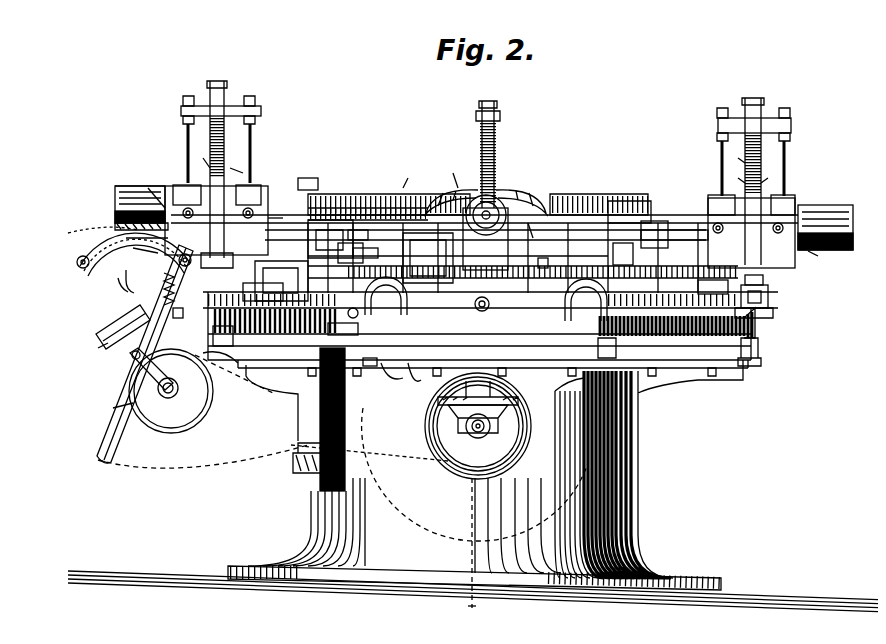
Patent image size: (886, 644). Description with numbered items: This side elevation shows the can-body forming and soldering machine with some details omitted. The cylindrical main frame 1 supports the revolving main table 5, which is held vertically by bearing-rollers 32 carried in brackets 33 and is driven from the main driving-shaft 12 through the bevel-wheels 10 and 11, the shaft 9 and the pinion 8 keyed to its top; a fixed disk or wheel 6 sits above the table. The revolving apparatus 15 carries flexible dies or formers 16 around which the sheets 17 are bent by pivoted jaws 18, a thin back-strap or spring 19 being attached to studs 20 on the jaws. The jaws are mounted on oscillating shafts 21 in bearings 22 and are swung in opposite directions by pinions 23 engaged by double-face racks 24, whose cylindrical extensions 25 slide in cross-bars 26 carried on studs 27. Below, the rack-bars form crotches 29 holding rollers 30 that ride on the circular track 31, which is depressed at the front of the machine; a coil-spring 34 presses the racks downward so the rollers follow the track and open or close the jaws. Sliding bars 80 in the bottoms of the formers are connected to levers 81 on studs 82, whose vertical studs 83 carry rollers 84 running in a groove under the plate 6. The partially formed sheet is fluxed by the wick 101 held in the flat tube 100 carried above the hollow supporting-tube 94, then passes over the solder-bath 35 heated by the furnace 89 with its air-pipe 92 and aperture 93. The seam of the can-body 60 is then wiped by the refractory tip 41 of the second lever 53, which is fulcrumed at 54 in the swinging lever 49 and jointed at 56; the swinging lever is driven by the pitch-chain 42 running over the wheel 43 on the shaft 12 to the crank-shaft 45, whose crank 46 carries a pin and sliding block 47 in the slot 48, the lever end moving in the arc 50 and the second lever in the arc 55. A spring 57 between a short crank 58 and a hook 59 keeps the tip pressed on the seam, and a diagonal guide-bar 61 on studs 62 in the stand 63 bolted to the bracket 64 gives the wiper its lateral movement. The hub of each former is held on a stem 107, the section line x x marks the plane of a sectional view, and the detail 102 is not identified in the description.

The main frame 1 is at (494, 478).
The main table 5 is at (544, 258).
The stationary disk or wheel 6 is at (560, 195).
The pinion 8 is at (472, 614).
The shaft 9 is at (430, 381).
The bevel-wheel 10 is at (418, 408).
The bevel-wheel 11 is at (455, 428).
The main driving-shaft 12 is at (380, 485).
The revolving apparatus 15 is at (484, 189).
The flexible dies or formers 16 is at (533, 170).
The sheets 17 is at (523, 232).
The pivoted jaws 18 is at (157, 195).
The flexible back-strap or spring 19 is at (110, 192).
The studs 20 is at (110, 212).
The oscillating shafts 21 is at (257, 186).
The bearings 22 is at (245, 176).
The pinions 23 is at (195, 165).
The double-face racks 24 is at (240, 165).
The cylindrical extension 25 is at (753, 90).
The cross-bars 26 is at (253, 103).
The studs 27 is at (180, 128).
The crotches 29 is at (190, 318).
The rollers 30 is at (205, 325).
The circular track 31 is at (470, 312).
The bearing-rollers 32 is at (343, 314).
The brackets 33 is at (592, 336).
The coil-spring 34 is at (735, 158).
The solder-bath 35 is at (207, 138).
The tip 41 is at (246, 208).
The pitch-chain 42 is at (278, 440).
The wheel 43 is at (385, 300).
The crank-shaft 45 is at (171, 391).
The crank 46 is at (143, 350).
The pin and sliding block 47 is at (118, 358).
The slot 48 is at (110, 395).
The swinging lever 49 is at (92, 452).
The arc 50 is at (170, 462).
The second end lever 53 is at (96, 310).
The radial fulcrum or bearing 54 is at (90, 330).
The arc 55 is at (65, 243).
The joint 56 is at (144, 258).
The spring 57 is at (167, 295).
The short crank 58 is at (118, 280).
The hook 59 is at (170, 308).
The can-body 60 is at (115, 178).
The diagonal guide-bar 61 is at (88, 247).
The studs 62 is at (72, 260).
The stand 63 is at (756, 272).
The bracket 64 is at (110, 272).
The sliding bars 80 is at (670, 221).
The levers 81 is at (366, 185).
The studs 82 is at (345, 200).
The vertical studs 83 is at (647, 208).
The rollers 84 is at (400, 185).
The furnace or chamber 89 is at (281, 281).
The air-pipe 92 is at (374, 363).
The aperture 93 is at (263, 292).
The hollow supporting-tube 94 is at (346, 309).
The flat tube 100 is at (355, 247).
The wiper or wick 101 is at (355, 230).
The block 102 is at (304, 187).
The stem 107 is at (448, 170).
The section line x x is at (487, 91).